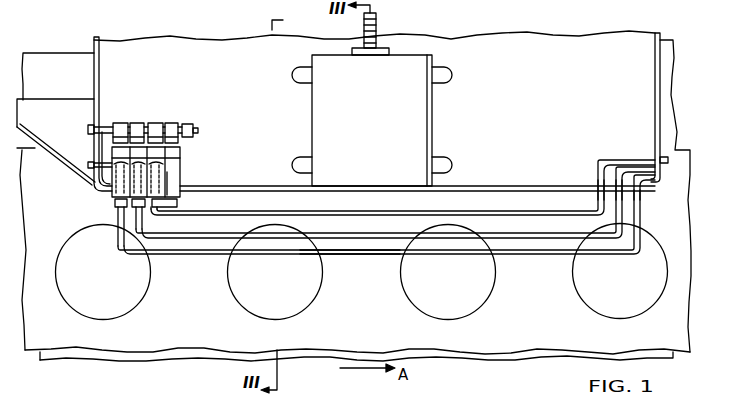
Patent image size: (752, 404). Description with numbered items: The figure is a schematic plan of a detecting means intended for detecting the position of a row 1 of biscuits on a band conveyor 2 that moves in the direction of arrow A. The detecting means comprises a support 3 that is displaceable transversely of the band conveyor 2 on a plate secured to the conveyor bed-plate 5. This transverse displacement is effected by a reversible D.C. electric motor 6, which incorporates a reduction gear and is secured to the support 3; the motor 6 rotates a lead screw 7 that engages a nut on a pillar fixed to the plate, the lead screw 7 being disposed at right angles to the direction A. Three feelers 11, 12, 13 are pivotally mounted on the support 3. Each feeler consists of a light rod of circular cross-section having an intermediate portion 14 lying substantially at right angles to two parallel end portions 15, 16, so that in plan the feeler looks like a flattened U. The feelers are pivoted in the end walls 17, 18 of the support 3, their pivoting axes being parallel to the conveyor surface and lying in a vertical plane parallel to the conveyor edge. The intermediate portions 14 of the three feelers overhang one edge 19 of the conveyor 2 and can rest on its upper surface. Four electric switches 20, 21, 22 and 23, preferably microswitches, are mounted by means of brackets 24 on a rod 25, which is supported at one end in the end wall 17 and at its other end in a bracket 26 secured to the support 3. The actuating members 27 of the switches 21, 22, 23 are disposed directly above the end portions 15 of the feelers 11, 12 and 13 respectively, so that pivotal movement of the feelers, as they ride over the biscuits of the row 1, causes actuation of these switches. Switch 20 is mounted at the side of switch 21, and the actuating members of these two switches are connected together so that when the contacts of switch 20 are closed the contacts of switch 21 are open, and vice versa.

The row of biscuits 1 is at (240, 302).
The band conveyor 2 is at (35, 350).
The support 3 is at (354, 192).
The conveyor bed-plate 5 is at (78, 357).
The reversible D.C. electric motor 6 is at (372, 117).
The lead screw 7 is at (378, 30).
The feeler 11 is at (534, 212).
The feeler 12 is at (386, 233).
The feeler 13 is at (215, 252).
The intermediate portion 14 is at (338, 250).
The end portion 15 is at (148, 214).
The end portion 16 is at (598, 172).
The end wall 17 is at (100, 70).
The end wall 18 is at (655, 85).
The edge of the conveyor 19 is at (34, 150).
The electric switch 20 is at (182, 186).
The electric switch 21 is at (179, 168).
The electric switch 22 is at (179, 160).
The electric switch 23 is at (179, 151).
The brackets 24 is at (170, 124).
The rod 25 is at (198, 130).
The bracket 26 is at (187, 123).
The actuating members 27 is at (178, 203).